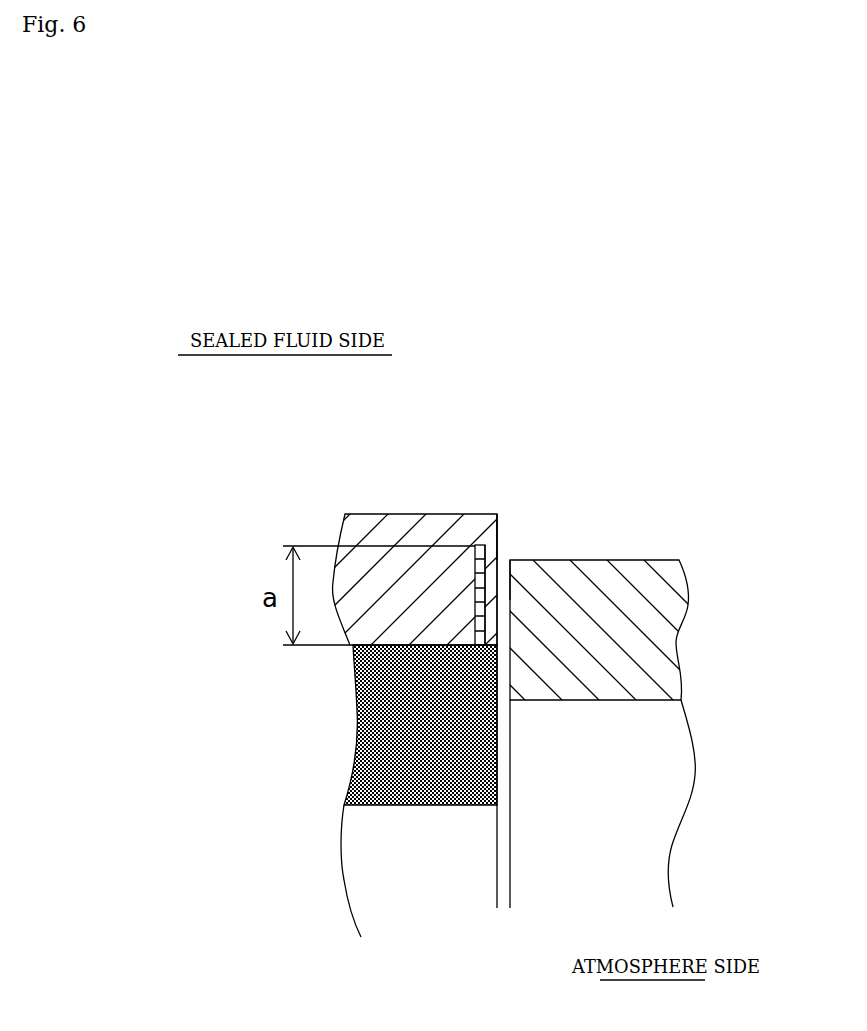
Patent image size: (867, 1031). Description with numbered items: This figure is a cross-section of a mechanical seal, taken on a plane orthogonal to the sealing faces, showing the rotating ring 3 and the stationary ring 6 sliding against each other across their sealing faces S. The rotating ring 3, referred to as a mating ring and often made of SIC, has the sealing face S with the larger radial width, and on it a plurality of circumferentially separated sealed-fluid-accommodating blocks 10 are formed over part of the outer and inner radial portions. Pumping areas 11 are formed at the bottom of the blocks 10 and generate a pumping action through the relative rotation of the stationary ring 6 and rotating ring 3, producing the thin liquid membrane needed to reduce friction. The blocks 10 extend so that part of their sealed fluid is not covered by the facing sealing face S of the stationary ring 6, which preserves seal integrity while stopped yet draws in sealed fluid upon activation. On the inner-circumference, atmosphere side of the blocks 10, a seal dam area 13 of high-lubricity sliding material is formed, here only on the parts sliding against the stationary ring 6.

The rotating ring 3 is at (422, 514).
The sealing face S is at (490, 570).
The sealed-fluid-accommodating block 10 is at (498, 563).
The pumping area 11 is at (486, 598).
The stationary ring 6 is at (643, 560).
The seal dam area 13 is at (482, 687).